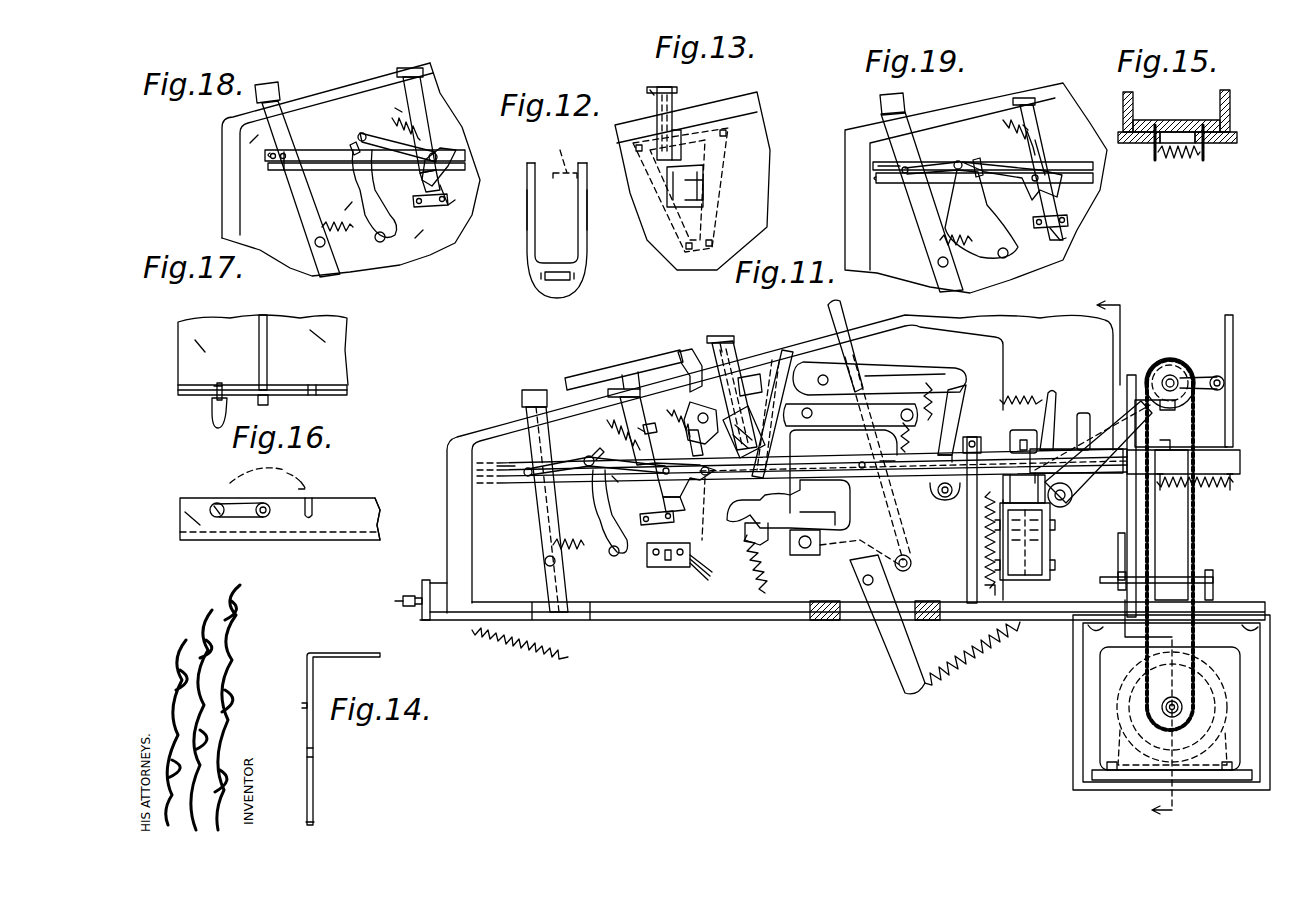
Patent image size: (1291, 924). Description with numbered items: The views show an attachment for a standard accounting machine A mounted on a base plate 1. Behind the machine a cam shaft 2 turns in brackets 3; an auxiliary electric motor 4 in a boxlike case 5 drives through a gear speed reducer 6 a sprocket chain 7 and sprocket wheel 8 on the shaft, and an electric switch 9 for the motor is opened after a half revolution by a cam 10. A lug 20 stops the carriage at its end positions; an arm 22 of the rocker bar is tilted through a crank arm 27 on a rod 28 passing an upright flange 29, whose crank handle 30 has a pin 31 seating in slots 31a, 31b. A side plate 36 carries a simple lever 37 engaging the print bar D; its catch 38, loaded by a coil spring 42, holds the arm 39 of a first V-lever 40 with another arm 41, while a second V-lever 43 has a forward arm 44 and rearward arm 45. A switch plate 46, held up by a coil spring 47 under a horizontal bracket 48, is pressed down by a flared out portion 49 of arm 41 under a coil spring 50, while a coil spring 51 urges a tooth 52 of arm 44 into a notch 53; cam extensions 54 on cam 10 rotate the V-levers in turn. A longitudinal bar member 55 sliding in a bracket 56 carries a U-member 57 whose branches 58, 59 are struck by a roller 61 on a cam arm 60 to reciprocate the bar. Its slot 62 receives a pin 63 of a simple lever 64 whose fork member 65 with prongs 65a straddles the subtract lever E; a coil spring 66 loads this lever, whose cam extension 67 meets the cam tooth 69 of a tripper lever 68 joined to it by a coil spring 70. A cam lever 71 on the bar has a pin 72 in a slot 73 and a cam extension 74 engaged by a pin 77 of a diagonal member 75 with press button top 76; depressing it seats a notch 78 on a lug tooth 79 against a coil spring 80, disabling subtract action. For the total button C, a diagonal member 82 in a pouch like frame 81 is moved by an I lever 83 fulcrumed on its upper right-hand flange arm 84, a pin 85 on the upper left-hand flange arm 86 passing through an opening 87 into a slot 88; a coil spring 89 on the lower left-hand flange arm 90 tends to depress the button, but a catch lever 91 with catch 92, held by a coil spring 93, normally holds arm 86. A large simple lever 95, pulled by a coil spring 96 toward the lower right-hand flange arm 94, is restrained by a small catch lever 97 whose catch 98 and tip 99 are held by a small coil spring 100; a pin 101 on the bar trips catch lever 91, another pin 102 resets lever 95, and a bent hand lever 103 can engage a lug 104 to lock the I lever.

In FIG. 17, the base plate 1 is at (345, 371).
In FIG. 16, the base plate 1 is at (320, 541).
In FIG. 11, the base plate 1 is at (690, 621).
In FIG. 11, the cam shaft 2 is at (1186, 370).
In FIG. 11, the brackets 3 is at (1190, 523).
In FIG. 11, the auxiliary electric motor 4 is at (1117, 727).
In FIG. 11, the boxlike case 5 is at (1080, 698).
In FIG. 11, the gear speed reducer 6 is at (1105, 678).
In FIG. 11, the sprocket chain 7 is at (1193, 645).
In FIG. 11, the sprocket wheel 8 is at (1178, 410).
In FIG. 11, the electric switch 9 is at (1040, 560).
In FIG. 11, the cam 10 is at (1178, 363).
In FIG. 11, the upwardly extending lug 20 is at (1122, 559).
In FIG. 11, the arm 22 is at (1126, 561).
In FIG. 11, the crank arm 27 is at (1118, 580).
In FIG. 17, the rod 28 is at (270, 333).
In FIG. 11, the rod 28 is at (428, 580).
In FIG. 17, the upright flange 29 is at (348, 390).
In FIG. 16, the upright flange 29 is at (378, 505).
In FIG. 11, the upright flange 29 is at (422, 584).
In FIG. 17, the crank handle 30 is at (212, 416).
In FIG. 16, the crank handle 30 is at (241, 520).
In FIG. 11, the crank handle 30 is at (398, 601).
In FIG. 17, the pin 31 is at (220, 382).
In FIG. 16, the pin 31 is at (215, 518).
In FIG. 17, the slot 31a is at (312, 394).
In FIG. 16, the slot 31a is at (313, 490).
In FIG. 17, the slot 31b is at (215, 388).
In FIG. 16, the slot 31b is at (216, 503).
In FIG. 18, the side plate 36 is at (346, 110).
In FIG. 13, the side plate 36 is at (768, 208).
In FIG. 19, the side plate 36 is at (922, 135).
In FIG. 11, the side plate 36 is at (492, 447).
In FIG. 11, the simple lever 37 is at (908, 373).
In FIG. 11, the catch 38 is at (966, 383).
In FIG. 11, the arm 39 is at (955, 422).
In FIG. 11, the irregular V-lever 40 is at (972, 500).
In FIG. 11, the arm 41 is at (1080, 440).
In FIG. 11, the coil spring 42 is at (936, 385).
In FIG. 11, the second V-lever 43 is at (1063, 507).
In FIG. 11, the forward arm 44 is at (1052, 392).
In FIG. 11, the arm 45 is at (1182, 430).
In FIG. 11, the switch plate 46 is at (1010, 441).
In FIG. 11, the coil spring 47 is at (1000, 552).
In FIG. 11, the horizontal bracket 48 is at (1012, 503).
In FIG. 11, the flared out portion 49 is at (1040, 480).
In FIG. 11, the coil spring 50 is at (985, 543).
In FIG. 11, the coil spring 51 is at (1024, 396).
In FIG. 11, the tooth 52 is at (1065, 450).
In FIG. 11, the notch 53 is at (1042, 447).
In FIG. 11, the cam extensions 54 is at (1157, 360).
In FIG. 18, the longitudinal bar member 55 is at (465, 155).
In FIG. 19, the longitudinal bar member 55 is at (1095, 180).
In FIG. 15, the longitudinal bar member 55 is at (1225, 141).
In FIG. 11, the longitudinal bar member 55 is at (828, 457).
In FIG. 11, the bracket 56 is at (966, 466).
In FIG. 15, the U-member 57 is at (1195, 120).
In FIG. 11, the U-member 57 is at (1222, 453).
In FIG. 15, the front branch 58 is at (1123, 100).
In FIG. 11, the front branch 58 is at (1127, 388).
In FIG. 15, the rear branch 59 is at (1232, 98).
In FIG. 11, the rear branch 59 is at (1233, 331).
In FIG. 11, the cam arm 60 is at (1222, 378).
In FIG. 11, the small roller 61 is at (1225, 385).
In FIG. 18, the longitudinal slot 62 is at (278, 170).
In FIG. 19, the longitudinal slot 62 is at (873, 176).
In FIG. 11, the longitudinal slot 62 is at (508, 475).
In FIG. 18, the pin 63 is at (287, 163).
In FIG. 19, the pin 63 is at (908, 170).
In FIG. 11, the pin 63 is at (532, 469).
In FIG. 18, the simple lever 64 is at (284, 129).
In FIG. 19, the simple lever 64 is at (915, 222).
In FIG. 11, the simple lever 64 is at (527, 427).
In FIG. 18, the fork member 65 is at (270, 84).
In FIG. 12, the fork member 65 is at (585, 268).
In FIG. 19, the fork member 65 is at (880, 100).
In FIG. 11, the fork member 65 is at (533, 390).
In FIG. 12, the prongs 65a is at (527, 215).
In FIG. 11, the coil spring 66 is at (537, 655).
In FIG. 18, the cam extension 67 is at (323, 217).
In FIG. 19, the cam extension 67 is at (952, 237).
In FIG. 11, the cam extension 67 is at (556, 538).
In FIG. 18, the tripper lever 68 is at (370, 213).
In FIG. 19, the tripper lever 68 is at (960, 225).
In FIG. 11, the tripper lever 68 is at (600, 516).
In FIG. 18, the cam tooth 69 is at (346, 208).
In FIG. 11, the cam tooth 69 is at (575, 518).
In FIG. 18, the coil spring 70 is at (334, 233).
In FIG. 19, the coil spring 70 is at (990, 230).
In FIG. 11, the coil spring 70 is at (575, 548).
In FIG. 18, the cam lever 71 is at (446, 186).
In FIG. 19, the cam lever 71 is at (1048, 185).
In FIG. 11, the cam lever 71 is at (681, 482).
In FIG. 18, the pin 72 is at (358, 136).
In FIG. 19, the pin 72 is at (960, 160).
In FIG. 11, the pin 72 is at (591, 456).
In FIG. 18, the slot 73 is at (356, 152).
In FIG. 19, the slot 73 is at (960, 170).
In FIG. 11, the slot 73 is at (574, 467).
In FIG. 18, the triangular cam extension 74 is at (440, 152).
In FIG. 11, the triangular cam extension 74 is at (672, 512).
In FIG. 11, the diagonal member 75 is at (660, 420).
In FIG. 18, the press button top 76 is at (410, 68).
In FIG. 19, the press button top 76 is at (1025, 98).
In FIG. 11, the press button top 76 is at (637, 389).
In FIG. 18, the pin 77 is at (410, 170).
In FIG. 19, the pin 77 is at (1055, 210).
In FIG. 11, the pin 77 is at (663, 526).
In FIG. 18, the notch 78 is at (430, 118).
In FIG. 19, the notch 78 is at (1043, 140).
In FIG. 11, the notch 78 is at (694, 434).
In FIG. 18, the lug tooth 79 is at (395, 108).
In FIG. 19, the lug tooth 79 is at (1030, 128).
In FIG. 11, the lug tooth 79 is at (638, 428).
In FIG. 18, the coil spring 80 is at (392, 118).
In FIG. 19, the coil spring 80 is at (1010, 140).
In FIG. 11, the coil spring 80 is at (606, 428).
In FIG. 13, the pouch like frame 81 is at (730, 160).
In FIG. 11, the pouch like frame 81 is at (790, 380).
In FIG. 14, the diagonal member 82 is at (318, 653).
In FIG. 13, the diagonal member 82 is at (688, 110).
In FIG. 11, the diagonal member 82 is at (737, 362).
In FIG. 11, the I lever 83 is at (787, 494).
In FIG. 11, the upper right-hand flange arm 84 is at (832, 396).
In FIG. 11, the pin 85 is at (762, 380).
In FIG. 11, the upper left-hand flange arm 86 is at (780, 365).
In FIG. 13, the opening 87 is at (706, 181).
In FIG. 11, the opening 87 is at (767, 435).
In FIG. 14, the slot 88 is at (307, 753).
In FIG. 13, the slot 88 is at (703, 192).
In FIG. 11, the slot 88 is at (678, 356).
In FIG. 11, the coil spring 89 is at (760, 582).
In FIG. 11, the lower left-hand flange arm 90 is at (752, 540).
In FIG. 11, the catch lever 91 is at (707, 475).
In FIG. 11, the catch 92 is at (642, 479).
In FIG. 11, the coil spring 93 is at (670, 432).
In FIG. 11, the lower right-hand flange arm 94 is at (832, 513).
In FIG. 11, the large vertically disposed simple lever 95 is at (893, 661).
In FIG. 11, the coil spring 96 is at (978, 662).
In FIG. 11, the small catch lever 97 is at (911, 430).
In FIG. 11, the catch 98 is at (870, 432).
In FIG. 11, the tip 99 is at (856, 412).
In FIG. 11, the small coil spring 100 is at (890, 460).
In FIG. 11, the pin 101 is at (720, 523).
In FIG. 11, the pin 102 is at (858, 466).
In FIG. 11, the bent hand lever 103 is at (845, 317).
In FIG. 11, the lug 104 is at (806, 558).
In FIG. 18, the machine A is at (222, 172).
In FIG. 13, the machine A is at (757, 98).
In FIG. 19, the machine A is at (983, 103).
In FIG. 11, the machine A is at (447, 501).
In FIG. 13, the total button C is at (647, 90).
In FIG. 11, the total button C is at (722, 340).
In FIG. 11, the print bar D is at (630, 375).
In FIG. 12, the subtract lever E is at (565, 154).